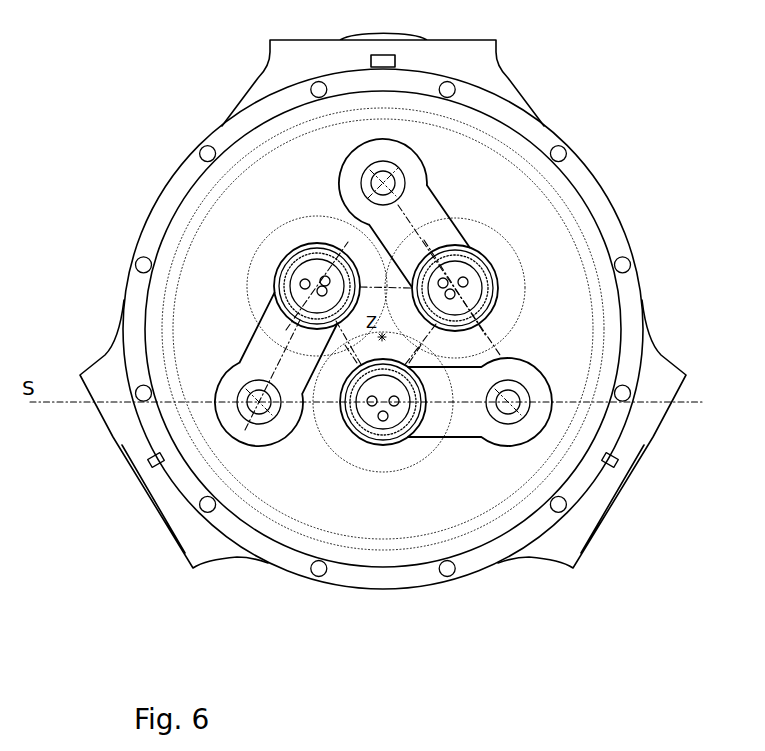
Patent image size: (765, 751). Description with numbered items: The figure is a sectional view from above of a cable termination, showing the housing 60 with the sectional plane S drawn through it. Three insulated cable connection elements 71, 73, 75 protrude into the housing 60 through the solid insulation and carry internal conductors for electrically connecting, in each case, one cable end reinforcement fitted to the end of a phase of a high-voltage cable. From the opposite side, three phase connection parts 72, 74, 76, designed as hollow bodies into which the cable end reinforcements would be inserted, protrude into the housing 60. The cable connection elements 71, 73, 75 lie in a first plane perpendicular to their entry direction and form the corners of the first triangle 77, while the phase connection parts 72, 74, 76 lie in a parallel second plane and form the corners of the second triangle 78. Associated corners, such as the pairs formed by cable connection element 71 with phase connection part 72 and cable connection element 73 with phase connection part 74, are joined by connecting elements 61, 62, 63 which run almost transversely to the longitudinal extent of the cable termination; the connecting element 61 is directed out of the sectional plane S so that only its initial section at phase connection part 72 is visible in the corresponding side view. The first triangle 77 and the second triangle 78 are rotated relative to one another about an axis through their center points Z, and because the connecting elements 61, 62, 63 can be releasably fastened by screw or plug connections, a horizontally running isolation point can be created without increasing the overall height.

The housing 60 is at (155, 232).
The connecting element 61 is at (262, 343).
The connecting element 62 is at (455, 420).
The connecting element 63 is at (433, 236).
The cable connection element 71 is at (283, 278).
The phase connection part 72 is at (257, 402).
The cable connection element 73 is at (371, 445).
The phase connection part 74 is at (528, 398).
The cable connection element 75 is at (463, 265).
The phase connection part 76 is at (386, 179).
The first triangle 77 is at (340, 333).
The second triangle 78 is at (478, 337).